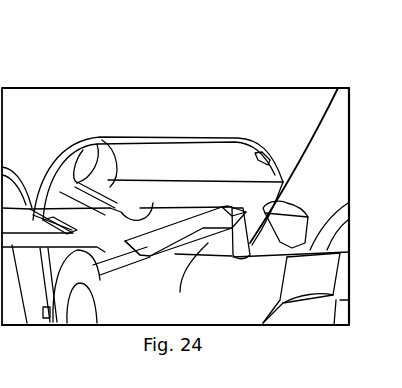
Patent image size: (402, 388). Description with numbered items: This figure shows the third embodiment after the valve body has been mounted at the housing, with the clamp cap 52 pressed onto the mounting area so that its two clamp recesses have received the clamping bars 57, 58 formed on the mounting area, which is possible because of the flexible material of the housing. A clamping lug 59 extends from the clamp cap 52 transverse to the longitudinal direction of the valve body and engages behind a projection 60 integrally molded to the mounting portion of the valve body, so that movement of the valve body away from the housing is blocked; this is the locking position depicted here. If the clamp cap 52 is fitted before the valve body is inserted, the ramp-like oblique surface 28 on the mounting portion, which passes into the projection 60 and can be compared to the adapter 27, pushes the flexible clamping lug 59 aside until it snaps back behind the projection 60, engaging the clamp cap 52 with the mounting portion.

The clamp cap 52 is at (198, 127).
The clamping bar 57 is at (153, 203).
The clamping lug 59 is at (273, 177).
The clamping bar 58 is at (287, 212).
The oblique surface 28 is at (163, 251).
The projection 60 is at (187, 280).
The adapter 27 is at (215, 245).